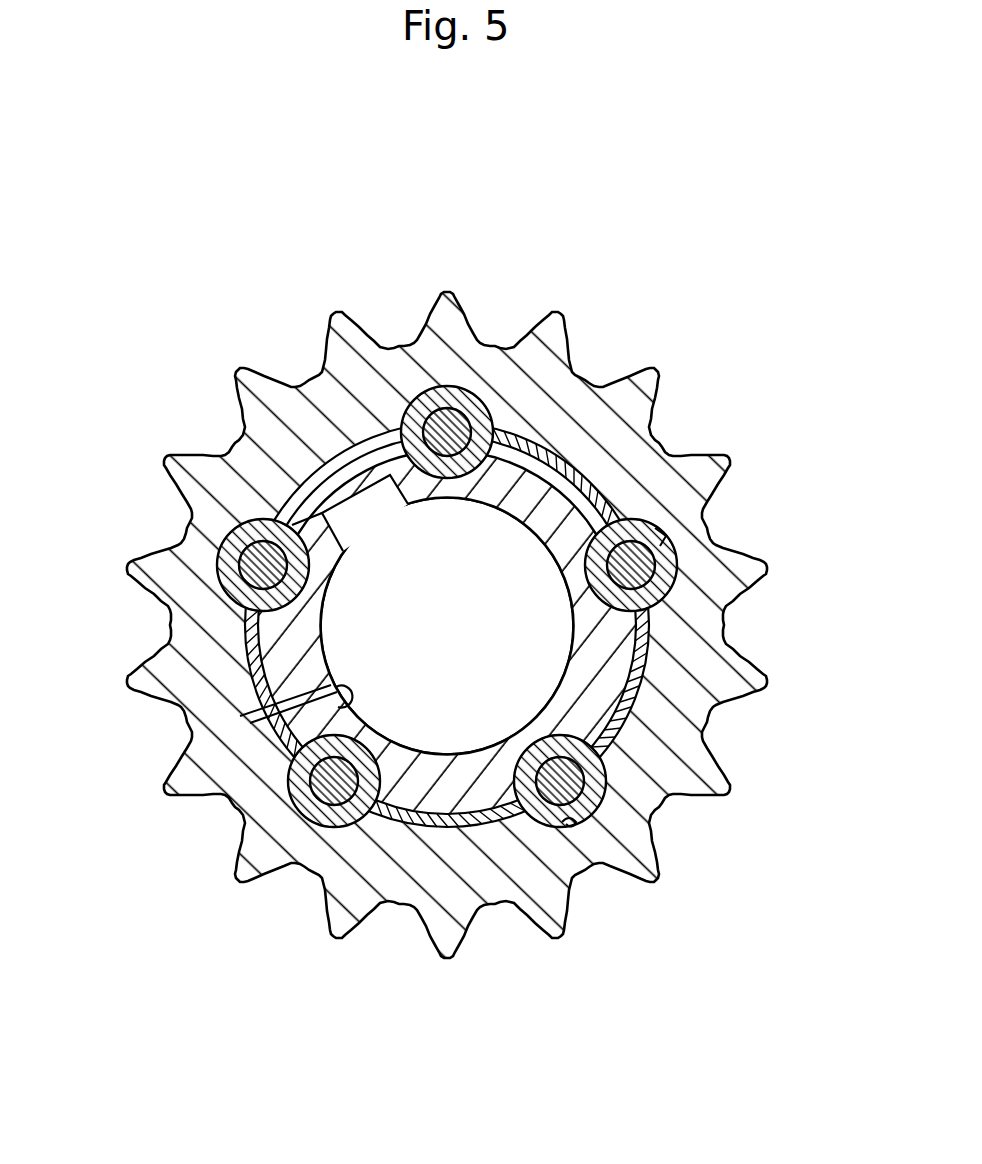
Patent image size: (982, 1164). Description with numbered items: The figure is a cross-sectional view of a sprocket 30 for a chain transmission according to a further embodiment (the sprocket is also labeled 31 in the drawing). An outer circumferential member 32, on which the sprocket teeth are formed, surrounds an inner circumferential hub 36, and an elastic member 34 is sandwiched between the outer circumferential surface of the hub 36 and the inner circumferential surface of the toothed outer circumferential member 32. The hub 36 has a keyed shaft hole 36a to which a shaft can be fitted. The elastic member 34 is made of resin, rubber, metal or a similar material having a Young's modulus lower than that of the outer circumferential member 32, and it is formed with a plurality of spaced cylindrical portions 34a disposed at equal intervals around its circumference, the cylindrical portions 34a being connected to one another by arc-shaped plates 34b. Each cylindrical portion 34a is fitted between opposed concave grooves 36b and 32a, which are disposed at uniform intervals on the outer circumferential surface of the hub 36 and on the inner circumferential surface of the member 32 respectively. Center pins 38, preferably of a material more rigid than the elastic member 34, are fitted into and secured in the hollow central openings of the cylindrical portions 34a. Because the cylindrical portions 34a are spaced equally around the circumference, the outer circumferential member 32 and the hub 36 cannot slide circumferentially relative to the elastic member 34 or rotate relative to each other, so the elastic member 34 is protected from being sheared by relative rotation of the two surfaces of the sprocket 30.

The sprocket 30 is at (318, 177).
The sprocket 31 is at (370, 177).
The outer circumferential member 32 is at (680, 714).
The concave groove 32a is at (571, 822).
The elastic member 34 is at (558, 606).
The cylindrical portion 34a is at (656, 568).
The arc-shaped plate 34b is at (675, 600).
The inner circumferential hub 36 is at (346, 715).
The keyed shaft hole 36a is at (245, 720).
The concave groove 36b is at (497, 797).
The center pin 38 is at (668, 535).